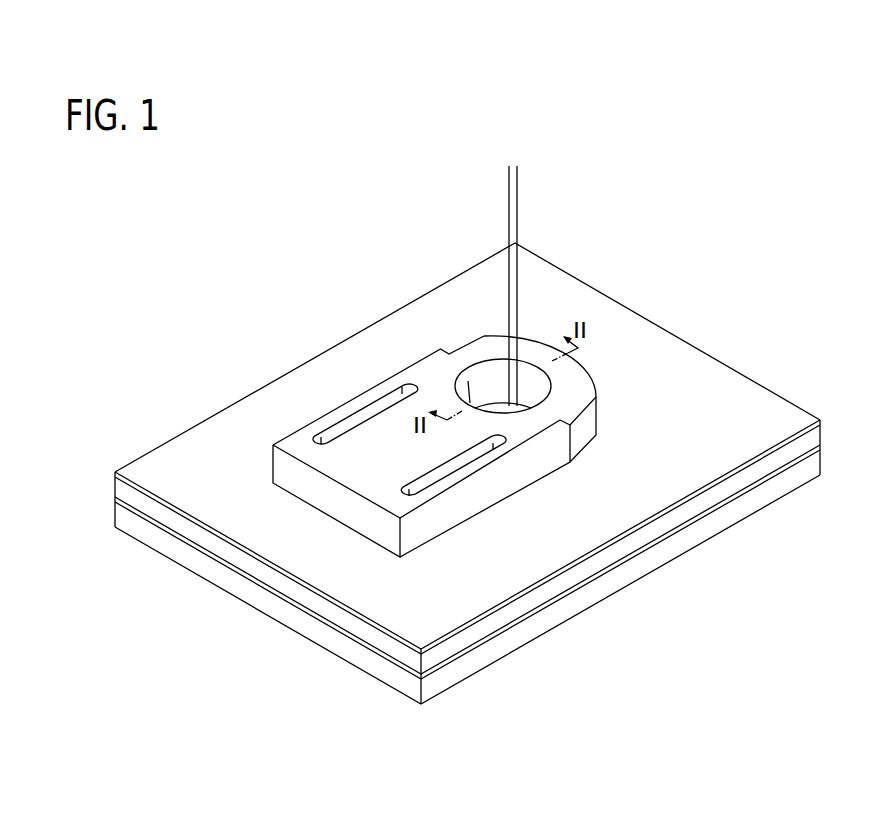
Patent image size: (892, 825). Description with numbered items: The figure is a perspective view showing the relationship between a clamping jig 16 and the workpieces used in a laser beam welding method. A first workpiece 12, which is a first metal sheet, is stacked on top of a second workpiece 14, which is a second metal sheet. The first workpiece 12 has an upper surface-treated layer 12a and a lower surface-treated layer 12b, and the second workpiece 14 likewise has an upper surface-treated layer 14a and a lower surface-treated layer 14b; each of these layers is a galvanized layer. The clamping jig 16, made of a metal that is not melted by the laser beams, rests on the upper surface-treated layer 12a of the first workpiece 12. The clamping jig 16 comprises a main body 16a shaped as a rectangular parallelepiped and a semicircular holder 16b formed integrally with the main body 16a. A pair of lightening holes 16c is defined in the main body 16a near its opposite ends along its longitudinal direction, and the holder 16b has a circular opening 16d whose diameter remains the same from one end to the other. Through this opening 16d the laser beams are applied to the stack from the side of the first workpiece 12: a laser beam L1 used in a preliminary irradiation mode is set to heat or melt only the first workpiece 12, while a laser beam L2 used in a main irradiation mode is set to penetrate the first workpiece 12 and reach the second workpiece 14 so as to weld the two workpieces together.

The first workpiece 12 is at (424, 458).
The upper surface-treated layer 12a is at (114, 474).
The lower surface-treated layer 12b is at (115, 498).
The second workpiece 14 is at (452, 574).
The upper surface-treated layer 14a is at (131, 512).
The lower surface-treated layer 14b is at (148, 547).
The clamping jig 16 is at (435, 438).
The main body 16a is at (384, 437).
The holder 16b is at (582, 380).
The lightening holes 16c is at (393, 395).
The opening 16d is at (493, 370).
The laser beam L1 is at (518, 190).
The laser beam L2 is at (569, 286).